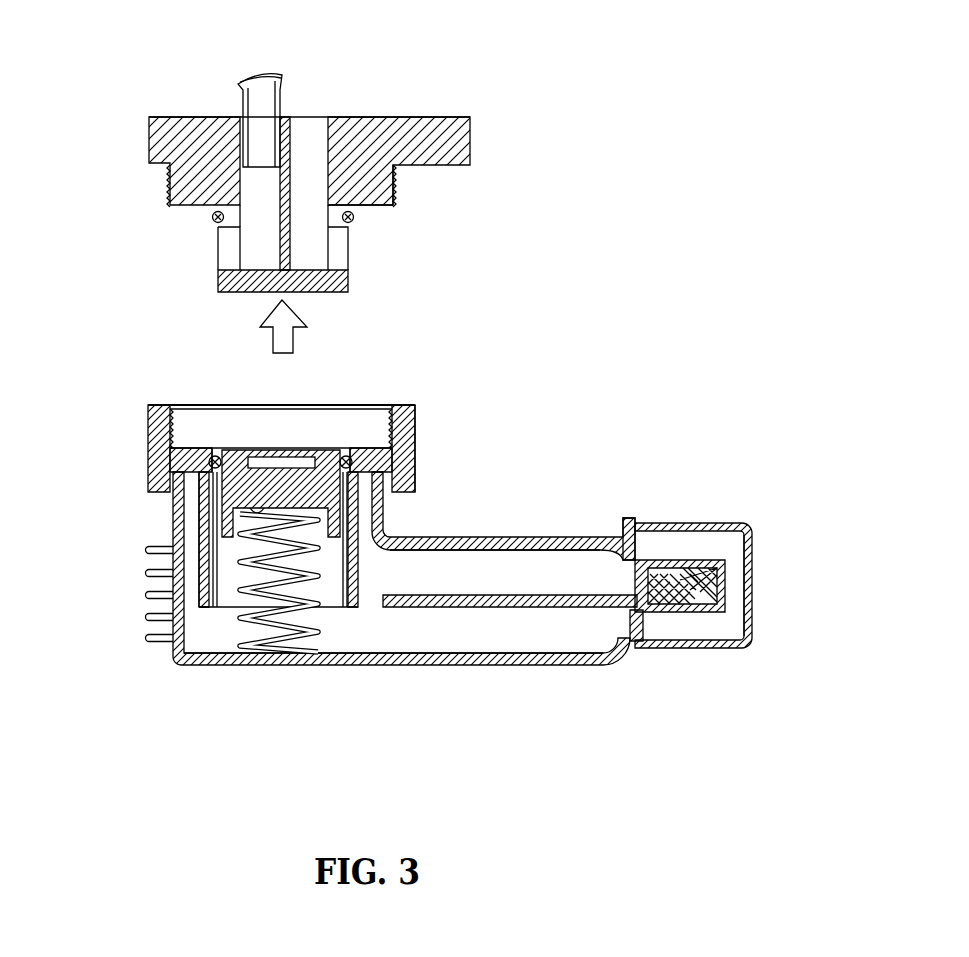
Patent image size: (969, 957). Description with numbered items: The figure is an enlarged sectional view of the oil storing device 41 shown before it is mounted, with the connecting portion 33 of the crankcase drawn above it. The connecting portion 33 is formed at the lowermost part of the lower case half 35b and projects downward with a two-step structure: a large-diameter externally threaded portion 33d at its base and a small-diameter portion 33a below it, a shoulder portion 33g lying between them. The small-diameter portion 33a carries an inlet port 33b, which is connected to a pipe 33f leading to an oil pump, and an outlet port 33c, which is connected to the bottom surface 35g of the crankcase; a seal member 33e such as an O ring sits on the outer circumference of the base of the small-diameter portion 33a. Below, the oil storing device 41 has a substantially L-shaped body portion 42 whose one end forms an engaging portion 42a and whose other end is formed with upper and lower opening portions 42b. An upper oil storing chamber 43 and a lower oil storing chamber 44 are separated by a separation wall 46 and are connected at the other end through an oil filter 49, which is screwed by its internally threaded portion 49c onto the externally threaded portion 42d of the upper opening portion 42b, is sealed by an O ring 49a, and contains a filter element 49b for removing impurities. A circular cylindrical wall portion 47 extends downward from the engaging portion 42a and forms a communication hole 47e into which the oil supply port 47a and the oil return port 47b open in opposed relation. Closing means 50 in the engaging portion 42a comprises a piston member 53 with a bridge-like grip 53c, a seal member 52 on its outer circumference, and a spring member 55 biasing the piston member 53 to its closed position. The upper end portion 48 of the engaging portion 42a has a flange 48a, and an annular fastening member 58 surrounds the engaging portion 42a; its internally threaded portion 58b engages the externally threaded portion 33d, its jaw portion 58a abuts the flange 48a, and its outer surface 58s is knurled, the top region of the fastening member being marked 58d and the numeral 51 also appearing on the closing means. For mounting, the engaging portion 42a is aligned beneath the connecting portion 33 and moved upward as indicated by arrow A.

The connecting portion 33 is at (155, 235).
The small-diameter portion 33a is at (222, 303).
The inlet port 33b is at (226, 238).
The outlet port 33c is at (340, 258).
The externally threaded portion 33d is at (397, 183).
The seal member 33e is at (354, 217).
The pipe 33f is at (268, 90).
The shoulder portion 33g is at (387, 207).
The lower case half 35b is at (190, 118).
The bottom surface of the crankcase 35g is at (357, 117).
The arrow A is at (293, 337).
The oil storing device 41 is at (135, 388).
The body portion 42 is at (287, 493).
The engaging portion 42a is at (265, 438).
The opening portion 42b is at (636, 560).
The externally threaded portion 42d is at (177, 505).
The upper oil storing chamber 43 is at (543, 537).
The lower oil storing chamber 44 is at (500, 643).
The separation wall 46 is at (446, 608).
The circular cylindrical wall portion 47 is at (207, 575).
The oil supply port 47a is at (207, 503).
The oil return port 47b is at (387, 512).
The communication hole 47e is at (178, 656).
The upper end portion 48 is at (188, 456).
The flange 48a is at (402, 452).
The oil filter 49 is at (722, 518).
The O ring 49a is at (648, 570).
The filter element 49b is at (720, 600).
The internally threaded portion 49c is at (666, 585).
The closing means 50 is at (333, 558).
The valve seat projection 51 is at (257, 512).
The seal member 52 is at (357, 443).
The piston member 53 is at (283, 480).
The grip 53c is at (296, 462).
The spring member 55 is at (305, 610).
The fastening member 58 is at (418, 445).
The jaw portion 58a is at (418, 480).
The internally threaded portion 58b is at (405, 425).
The top of cover 58d is at (177, 410).
The knurled outer circumferential surface 58s is at (418, 416).